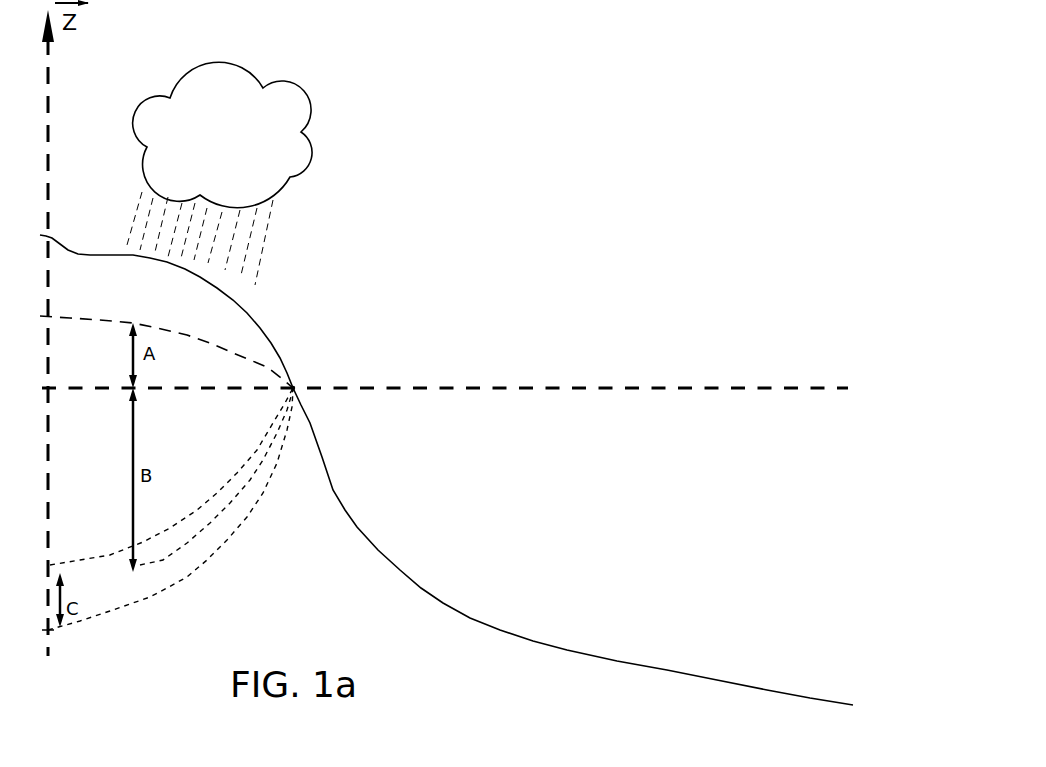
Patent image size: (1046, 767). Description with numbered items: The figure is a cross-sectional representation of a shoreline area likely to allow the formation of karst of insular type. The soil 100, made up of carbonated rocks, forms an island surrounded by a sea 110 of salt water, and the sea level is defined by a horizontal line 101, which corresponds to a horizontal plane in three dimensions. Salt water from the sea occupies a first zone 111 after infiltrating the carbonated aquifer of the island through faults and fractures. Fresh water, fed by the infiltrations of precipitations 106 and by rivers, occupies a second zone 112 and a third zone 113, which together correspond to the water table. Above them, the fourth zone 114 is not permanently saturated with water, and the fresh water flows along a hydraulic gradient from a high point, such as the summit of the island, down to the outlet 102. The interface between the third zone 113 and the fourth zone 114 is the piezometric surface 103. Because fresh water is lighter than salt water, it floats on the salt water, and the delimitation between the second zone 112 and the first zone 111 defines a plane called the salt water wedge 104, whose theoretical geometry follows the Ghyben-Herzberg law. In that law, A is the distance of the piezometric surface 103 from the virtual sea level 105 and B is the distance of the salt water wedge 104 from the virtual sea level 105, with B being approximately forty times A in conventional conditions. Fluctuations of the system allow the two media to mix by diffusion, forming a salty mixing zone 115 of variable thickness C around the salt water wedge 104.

The soil 100 is at (287, 342).
The horizontal line 101 is at (482, 380).
The outlet 102 is at (308, 396).
The piezometric surface 103 is at (122, 316).
The salt water wedge 104 is at (175, 566).
The virtual sea level 105 is at (172, 402).
The precipitations 106 is at (283, 77).
The sea 110 is at (681, 523).
The first zone 111 is at (385, 620).
The second zone 112 is at (114, 495).
The third zone 113 is at (100, 363).
The fourth zone 114 is at (206, 320).
The mixing zone 115 is at (121, 591).